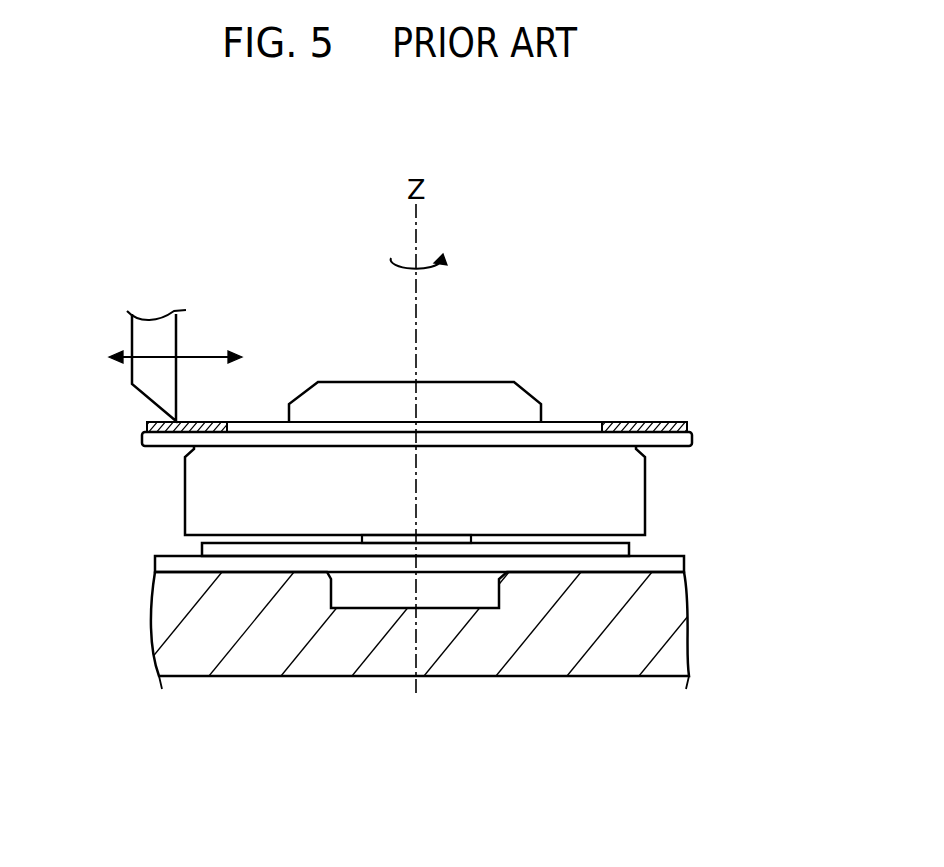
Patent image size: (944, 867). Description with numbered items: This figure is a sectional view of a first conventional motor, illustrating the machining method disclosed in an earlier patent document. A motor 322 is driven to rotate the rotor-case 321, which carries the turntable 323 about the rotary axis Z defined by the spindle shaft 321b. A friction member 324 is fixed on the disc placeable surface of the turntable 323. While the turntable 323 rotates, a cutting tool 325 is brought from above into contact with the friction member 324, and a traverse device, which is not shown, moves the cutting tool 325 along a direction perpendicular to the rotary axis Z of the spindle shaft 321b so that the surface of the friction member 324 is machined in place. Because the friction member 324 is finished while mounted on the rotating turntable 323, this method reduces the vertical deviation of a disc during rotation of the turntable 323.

The rotor-case 321 is at (648, 487).
The spindle shaft 321b is at (422, 340).
The motor 322 is at (720, 493).
The turntable 323 is at (165, 442).
The friction member 324 is at (148, 425).
The cutting tool 325 is at (170, 332).